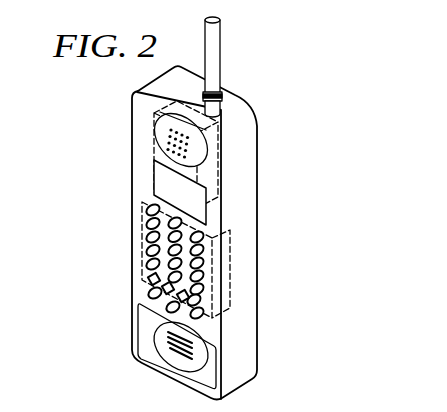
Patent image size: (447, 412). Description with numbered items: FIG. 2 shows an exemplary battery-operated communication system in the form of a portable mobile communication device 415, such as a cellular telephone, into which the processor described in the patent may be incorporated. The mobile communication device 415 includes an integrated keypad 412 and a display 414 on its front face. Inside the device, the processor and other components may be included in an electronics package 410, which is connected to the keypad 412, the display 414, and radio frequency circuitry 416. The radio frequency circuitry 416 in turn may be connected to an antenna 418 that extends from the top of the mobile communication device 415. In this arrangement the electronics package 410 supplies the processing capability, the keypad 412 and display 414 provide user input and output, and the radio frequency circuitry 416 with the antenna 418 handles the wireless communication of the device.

The electronics package 410 is at (238, 276).
The keypad 412 is at (150, 255).
The display 414 is at (150, 188).
The mobile communication device 415 is at (257, 332).
The radio frequency circuitry 416 is at (153, 157).
The antenna 418 is at (217, 56).